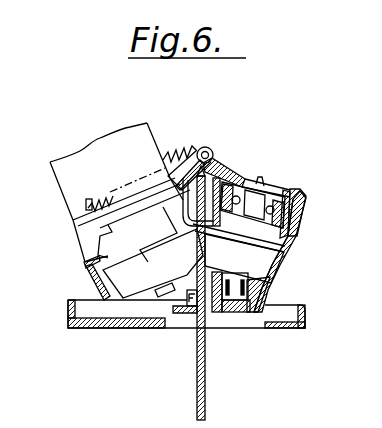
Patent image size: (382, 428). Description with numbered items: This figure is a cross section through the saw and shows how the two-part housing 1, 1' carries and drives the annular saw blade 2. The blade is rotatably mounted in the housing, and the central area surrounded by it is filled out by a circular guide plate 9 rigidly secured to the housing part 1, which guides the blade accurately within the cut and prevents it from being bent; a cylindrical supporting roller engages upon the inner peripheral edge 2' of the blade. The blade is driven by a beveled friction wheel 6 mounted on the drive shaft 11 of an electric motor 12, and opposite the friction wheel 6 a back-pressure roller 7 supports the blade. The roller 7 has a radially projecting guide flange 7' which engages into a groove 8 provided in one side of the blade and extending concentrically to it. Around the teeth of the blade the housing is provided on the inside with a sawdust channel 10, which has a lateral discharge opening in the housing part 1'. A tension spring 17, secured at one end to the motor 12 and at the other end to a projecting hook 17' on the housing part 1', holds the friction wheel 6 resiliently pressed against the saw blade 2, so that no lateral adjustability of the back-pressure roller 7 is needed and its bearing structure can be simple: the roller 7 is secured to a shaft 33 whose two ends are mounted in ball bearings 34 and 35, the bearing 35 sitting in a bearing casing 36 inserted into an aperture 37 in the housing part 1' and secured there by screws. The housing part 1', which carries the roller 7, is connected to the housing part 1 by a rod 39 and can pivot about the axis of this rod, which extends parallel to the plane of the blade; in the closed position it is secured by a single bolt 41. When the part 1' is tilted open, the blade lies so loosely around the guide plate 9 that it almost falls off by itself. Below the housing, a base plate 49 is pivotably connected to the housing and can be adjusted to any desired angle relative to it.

The housing part 1 is at (120, 226).
The housing part 1' is at (295, 235).
The annular saw blade 2 is at (191, 202).
The inner peripheral edge 2' is at (239, 253).
The friction wheel 6 is at (98, 283).
The back-pressure roller 7 is at (283, 288).
The guide flange 7' is at (285, 251).
The groove 8 is at (200, 242).
The circular guide plate 9 is at (196, 354).
The sawdust channel 10 is at (225, 178).
The drive shaft 11 is at (97, 258).
The electric motor 12 is at (62, 176).
The tension spring 17 is at (104, 205).
The projecting hook 17' is at (178, 136).
The shaft 33 is at (220, 314).
The ball bearing 34 is at (250, 314).
The ball bearing 35 is at (252, 180).
The bearing casing 36 is at (287, 190).
The aperture 37 is at (302, 191).
The rod 39 is at (206, 147).
The bolt 41 is at (190, 312).
The base plate 49 is at (68, 315).